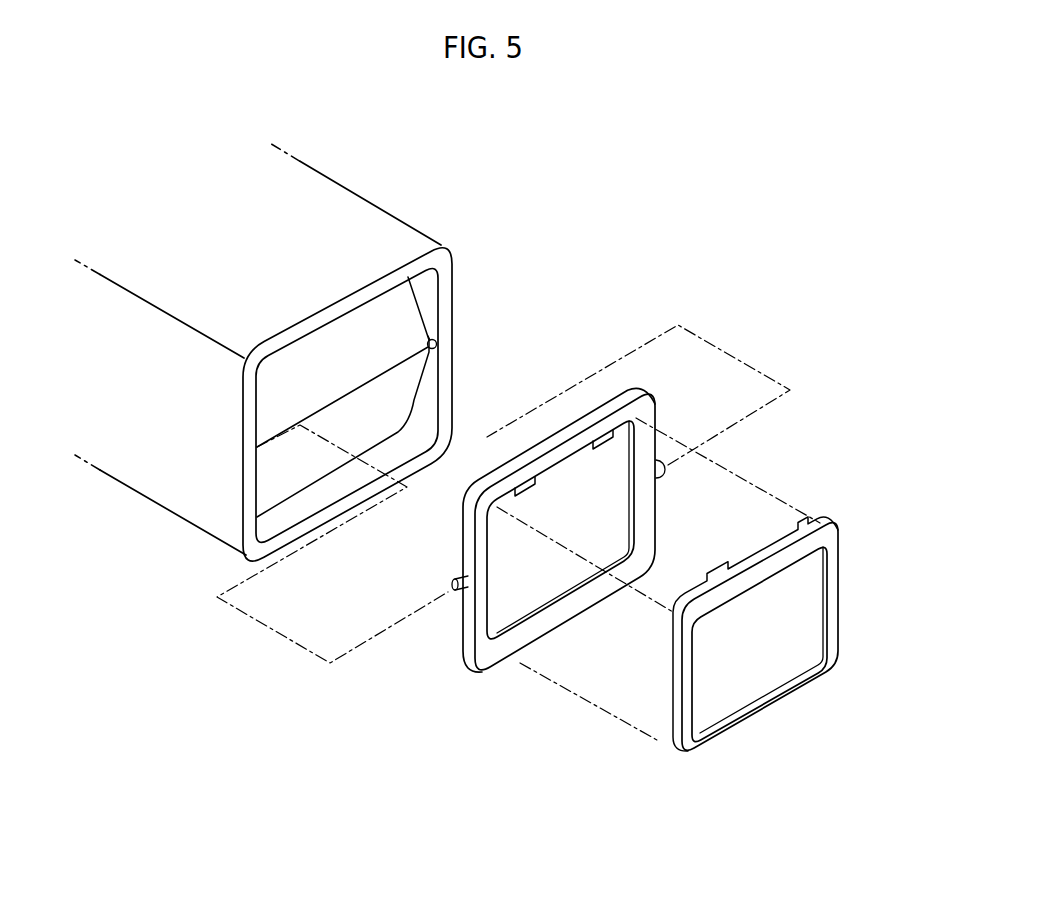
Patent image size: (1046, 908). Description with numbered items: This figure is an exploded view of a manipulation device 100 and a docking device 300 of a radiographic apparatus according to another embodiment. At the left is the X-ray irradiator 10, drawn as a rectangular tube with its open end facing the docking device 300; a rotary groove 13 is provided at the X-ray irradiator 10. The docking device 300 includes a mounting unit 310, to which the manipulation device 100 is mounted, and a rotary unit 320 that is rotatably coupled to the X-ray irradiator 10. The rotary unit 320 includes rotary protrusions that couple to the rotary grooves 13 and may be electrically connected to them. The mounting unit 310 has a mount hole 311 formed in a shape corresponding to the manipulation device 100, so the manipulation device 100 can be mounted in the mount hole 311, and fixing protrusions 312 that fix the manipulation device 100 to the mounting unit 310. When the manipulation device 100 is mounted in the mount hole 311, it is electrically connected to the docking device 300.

The X-ray irradiator 10 is at (355, 218).
The rotary groove 13 is at (434, 348).
The manipulation device 100 is at (845, 600).
The docking device 300 is at (553, 591).
The mounting unit 310 is at (555, 632).
The mount hole 311 is at (513, 593).
The fixing protrusion 312 is at (527, 488).
The rotary unit 320 is at (449, 593).